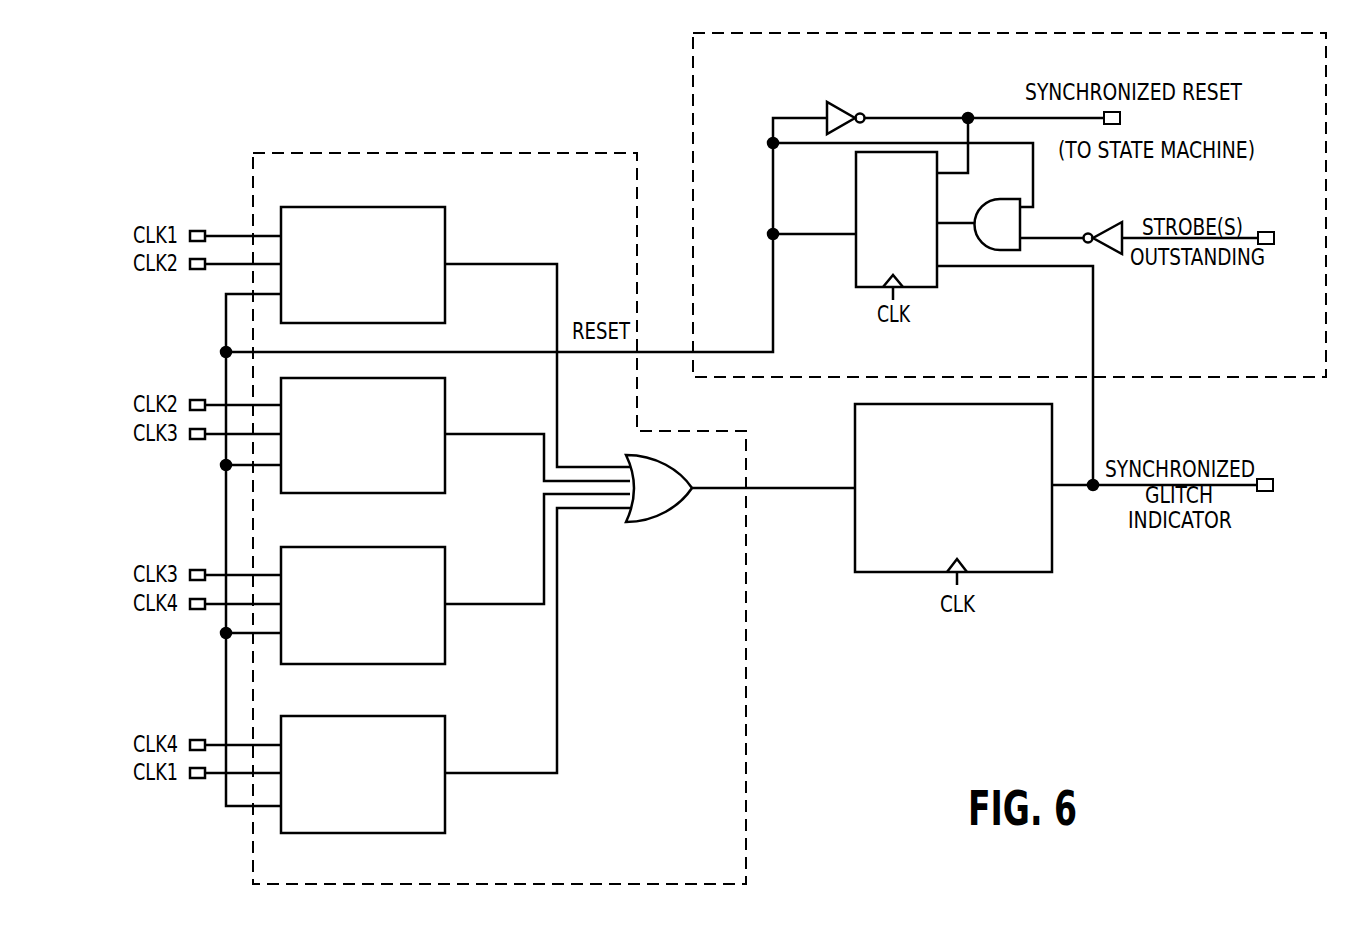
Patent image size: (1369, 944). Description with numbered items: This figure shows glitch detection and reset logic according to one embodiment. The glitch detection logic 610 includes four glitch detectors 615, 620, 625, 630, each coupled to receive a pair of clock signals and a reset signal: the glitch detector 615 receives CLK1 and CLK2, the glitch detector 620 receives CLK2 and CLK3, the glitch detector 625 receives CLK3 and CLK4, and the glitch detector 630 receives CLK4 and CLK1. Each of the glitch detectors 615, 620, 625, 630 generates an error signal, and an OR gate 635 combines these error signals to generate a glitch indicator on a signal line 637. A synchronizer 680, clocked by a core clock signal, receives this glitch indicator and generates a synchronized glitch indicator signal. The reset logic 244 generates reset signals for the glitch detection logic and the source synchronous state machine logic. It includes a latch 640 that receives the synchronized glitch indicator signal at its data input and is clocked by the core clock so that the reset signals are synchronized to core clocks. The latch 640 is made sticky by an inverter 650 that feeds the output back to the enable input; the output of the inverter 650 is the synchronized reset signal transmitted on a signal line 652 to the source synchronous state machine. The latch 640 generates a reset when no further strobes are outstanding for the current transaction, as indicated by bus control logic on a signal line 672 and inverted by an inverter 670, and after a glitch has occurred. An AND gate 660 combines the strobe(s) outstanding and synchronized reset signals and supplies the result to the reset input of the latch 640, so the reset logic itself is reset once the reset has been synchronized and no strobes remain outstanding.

The glitch detection logic 610 is at (678, 873).
The glitch detector 615 is at (414, 317).
The glitch detector 620 is at (414, 487).
The glitch detector 625 is at (414, 658).
The glitch detector 630 is at (414, 827).
The OR gate 635 is at (651, 523).
The signal line 637 is at (798, 488).
The latch 640 is at (937, 288).
The inverter 650 is at (842, 102).
The signal line 652 is at (1121, 118).
The AND gate 660 is at (1013, 237).
The inverter 670 is at (1108, 226).
The signal line 672 is at (1275, 243).
The synchronizer 680 is at (975, 473).
The reset logic 244 is at (1286, 357).